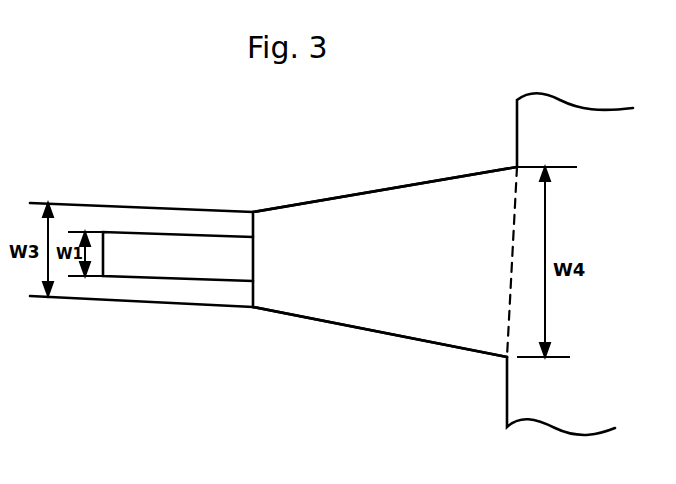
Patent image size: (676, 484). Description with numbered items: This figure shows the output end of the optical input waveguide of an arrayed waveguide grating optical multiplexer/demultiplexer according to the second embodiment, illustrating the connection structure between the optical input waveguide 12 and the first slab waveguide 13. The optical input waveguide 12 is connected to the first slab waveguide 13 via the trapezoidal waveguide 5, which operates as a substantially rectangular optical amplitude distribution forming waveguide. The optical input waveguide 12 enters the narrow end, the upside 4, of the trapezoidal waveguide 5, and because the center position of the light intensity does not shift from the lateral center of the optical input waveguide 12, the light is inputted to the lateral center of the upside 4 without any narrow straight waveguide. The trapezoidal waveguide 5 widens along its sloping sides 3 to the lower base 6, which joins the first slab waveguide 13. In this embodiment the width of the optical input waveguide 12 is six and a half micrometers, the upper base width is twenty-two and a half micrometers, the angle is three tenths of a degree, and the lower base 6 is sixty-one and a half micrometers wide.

The tapered side walls 3 is at (421, 181).
The upside 4 is at (246, 297).
The trapezoidal waveguide 5 is at (358, 210).
The lower base 6 is at (511, 312).
The optical input waveguide 12 is at (175, 250).
The first slab waveguide 13 is at (527, 120).